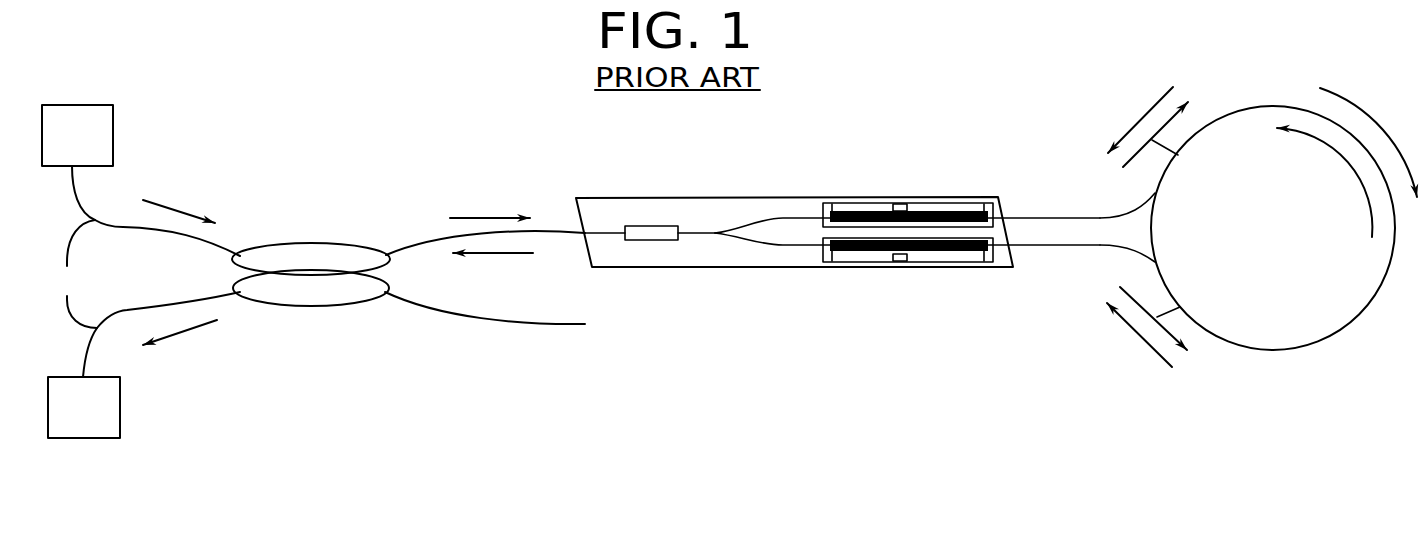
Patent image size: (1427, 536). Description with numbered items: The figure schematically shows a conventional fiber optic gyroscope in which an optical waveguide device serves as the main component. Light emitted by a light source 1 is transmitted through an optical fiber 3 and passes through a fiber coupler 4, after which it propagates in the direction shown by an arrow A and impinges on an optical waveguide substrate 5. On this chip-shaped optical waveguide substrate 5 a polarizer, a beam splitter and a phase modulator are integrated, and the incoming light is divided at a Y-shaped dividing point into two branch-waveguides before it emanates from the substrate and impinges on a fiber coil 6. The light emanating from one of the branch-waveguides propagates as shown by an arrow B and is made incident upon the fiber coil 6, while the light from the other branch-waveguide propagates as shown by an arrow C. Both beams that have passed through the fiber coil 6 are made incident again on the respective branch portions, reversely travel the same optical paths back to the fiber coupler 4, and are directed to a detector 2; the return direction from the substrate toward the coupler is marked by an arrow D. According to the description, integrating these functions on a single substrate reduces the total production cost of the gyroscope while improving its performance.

The light source 1 is at (78, 122).
The detector 2 is at (83, 424).
The optical fiber 3 is at (77, 274).
The fiber coupler 4 is at (316, 243).
The optical waveguide substrate 5 is at (853, 190).
The fiber coil 6 is at (1310, 348).
The arrow A is at (485, 217).
The arrow B is at (1178, 155).
The arrow C is at (1180, 307).
The light direction D is at (507, 256).